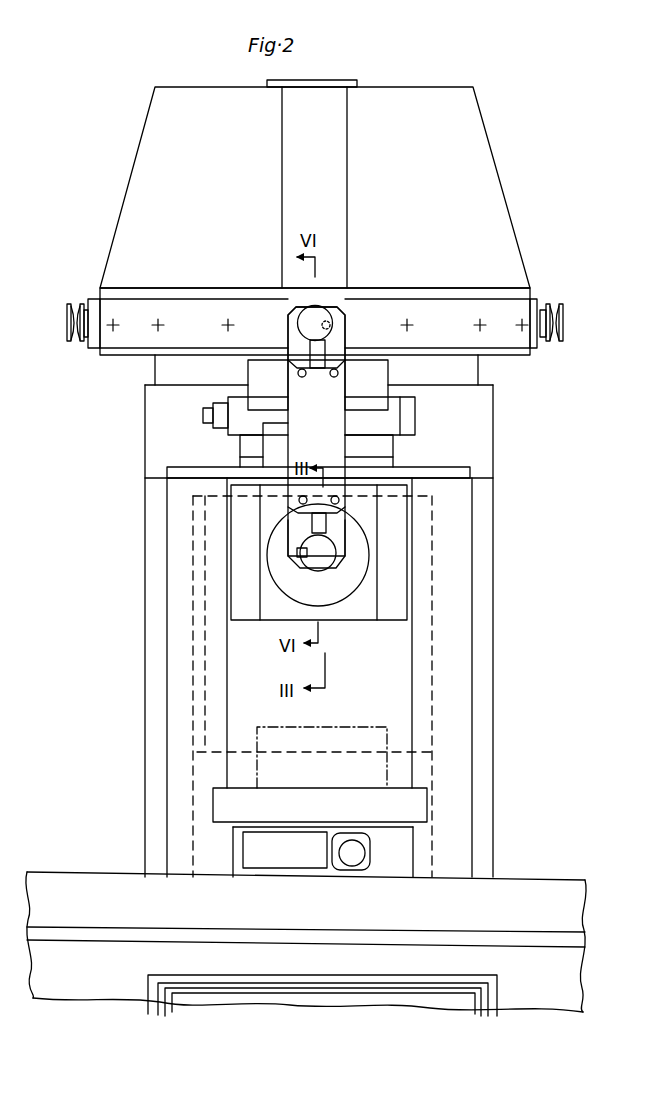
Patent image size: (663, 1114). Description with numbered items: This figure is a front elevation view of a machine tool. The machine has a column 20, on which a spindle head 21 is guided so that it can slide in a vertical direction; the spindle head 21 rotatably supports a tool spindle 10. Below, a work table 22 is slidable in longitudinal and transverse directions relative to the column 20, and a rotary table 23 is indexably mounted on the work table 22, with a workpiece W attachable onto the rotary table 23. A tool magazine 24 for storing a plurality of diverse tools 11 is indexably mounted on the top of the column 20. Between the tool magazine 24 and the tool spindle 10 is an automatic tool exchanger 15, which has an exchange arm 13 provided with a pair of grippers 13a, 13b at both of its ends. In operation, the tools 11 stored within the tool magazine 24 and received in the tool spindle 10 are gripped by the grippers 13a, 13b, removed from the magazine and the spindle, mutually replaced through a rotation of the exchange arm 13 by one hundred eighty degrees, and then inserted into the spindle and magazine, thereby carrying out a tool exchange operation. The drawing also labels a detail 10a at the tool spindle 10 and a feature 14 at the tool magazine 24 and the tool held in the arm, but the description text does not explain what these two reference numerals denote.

The tool spindle 10 is at (325, 577).
The locking element 10a is at (306, 560).
The tools 11 is at (67, 326).
The exchange arm 13 is at (327, 447).
The gripper 13a is at (349, 341).
The gripper 13b is at (349, 536).
The pivot bearing 14 is at (94, 320).
The automatic tool exchanger 15 is at (418, 420).
The column 20 is at (497, 515).
The spindle head 21 is at (364, 602).
The work table 22 is at (517, 889).
The rotary table 23 is at (414, 810).
The tool magazine 24 is at (535, 282).
The workpiece W is at (300, 728).